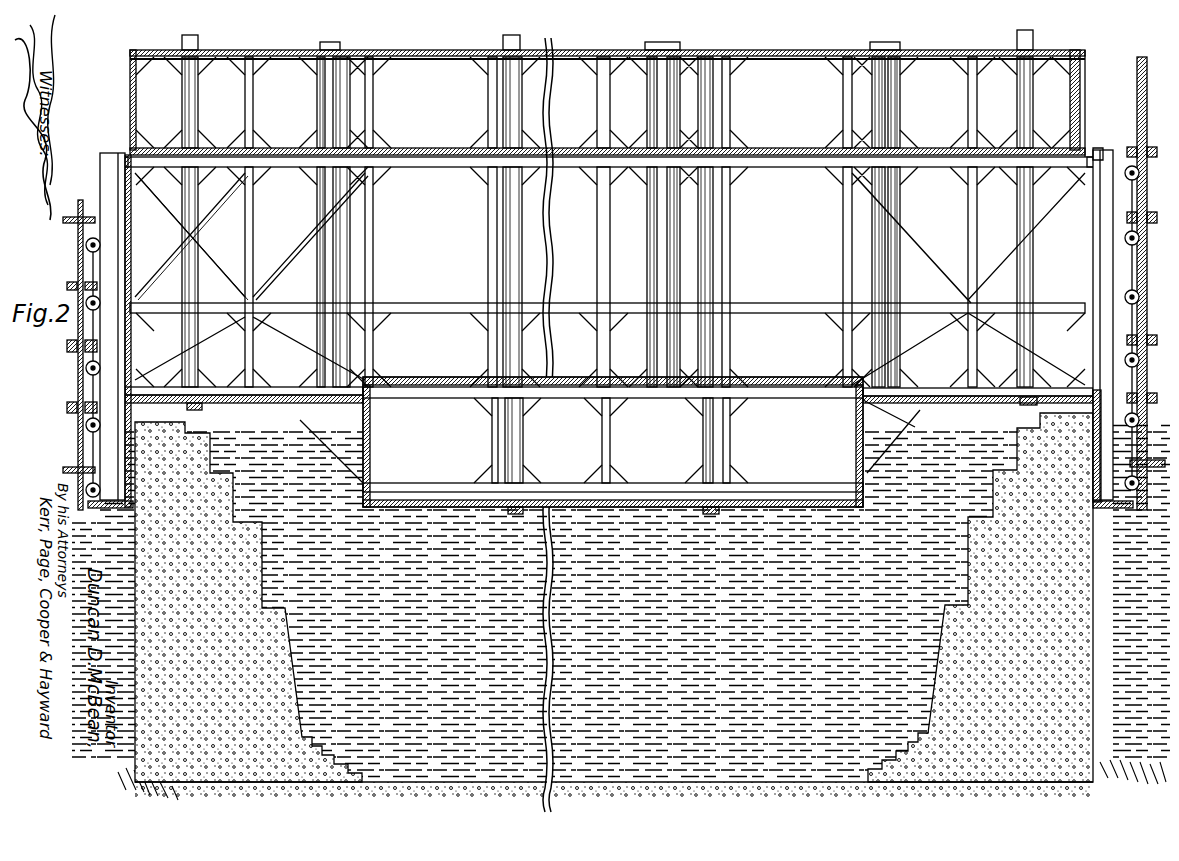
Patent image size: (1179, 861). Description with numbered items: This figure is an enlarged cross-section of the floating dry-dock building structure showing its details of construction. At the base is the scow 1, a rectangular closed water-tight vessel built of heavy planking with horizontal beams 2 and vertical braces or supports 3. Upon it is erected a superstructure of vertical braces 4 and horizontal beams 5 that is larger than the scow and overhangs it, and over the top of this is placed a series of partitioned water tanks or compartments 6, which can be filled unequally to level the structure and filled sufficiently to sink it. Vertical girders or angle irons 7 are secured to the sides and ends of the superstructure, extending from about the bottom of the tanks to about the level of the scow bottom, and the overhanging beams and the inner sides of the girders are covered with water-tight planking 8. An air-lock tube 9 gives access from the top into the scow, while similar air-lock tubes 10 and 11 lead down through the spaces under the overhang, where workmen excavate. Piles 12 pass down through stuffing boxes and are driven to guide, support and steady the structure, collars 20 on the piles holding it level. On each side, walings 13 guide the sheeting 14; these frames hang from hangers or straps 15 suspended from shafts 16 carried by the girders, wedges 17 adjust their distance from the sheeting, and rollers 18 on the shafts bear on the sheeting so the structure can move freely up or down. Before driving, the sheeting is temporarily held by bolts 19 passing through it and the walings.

The scow 1 is at (610, 442).
The horizontal beams 2 is at (660, 486).
The vertical braces or supports 3 is at (370, 446).
The vertical braces 4 is at (253, 209).
The horizontal beams 5 is at (780, 167).
The water tanks or compartments 6 is at (607, 93).
The vertical girders or angle irons 7 is at (608, 324).
The planking 8 is at (132, 408).
The air-lock tube 9 is at (649, 263).
The air-lock tube 10 is at (322, 277).
The air-lock tube 11 is at (937, 265).
The piles 12 is at (196, 234).
The walings 13 is at (68, 282).
The sheeting 14 is at (1137, 90).
The hangers or straps 15 is at (82, 394).
The shafts 16 is at (84, 370).
The wedges 17 is at (68, 346).
The rollers 18 is at (68, 413).
The bolts 19 is at (62, 222).
The collars 20 is at (204, 407).